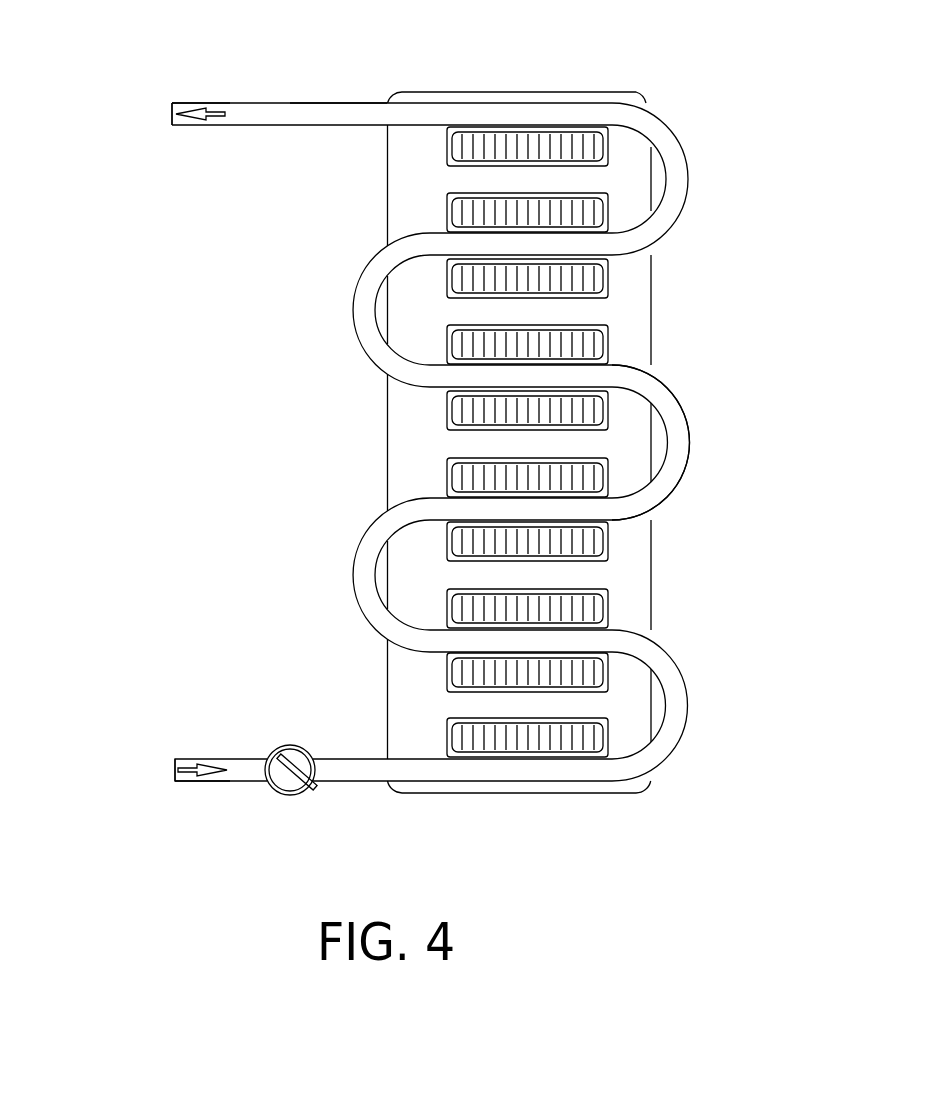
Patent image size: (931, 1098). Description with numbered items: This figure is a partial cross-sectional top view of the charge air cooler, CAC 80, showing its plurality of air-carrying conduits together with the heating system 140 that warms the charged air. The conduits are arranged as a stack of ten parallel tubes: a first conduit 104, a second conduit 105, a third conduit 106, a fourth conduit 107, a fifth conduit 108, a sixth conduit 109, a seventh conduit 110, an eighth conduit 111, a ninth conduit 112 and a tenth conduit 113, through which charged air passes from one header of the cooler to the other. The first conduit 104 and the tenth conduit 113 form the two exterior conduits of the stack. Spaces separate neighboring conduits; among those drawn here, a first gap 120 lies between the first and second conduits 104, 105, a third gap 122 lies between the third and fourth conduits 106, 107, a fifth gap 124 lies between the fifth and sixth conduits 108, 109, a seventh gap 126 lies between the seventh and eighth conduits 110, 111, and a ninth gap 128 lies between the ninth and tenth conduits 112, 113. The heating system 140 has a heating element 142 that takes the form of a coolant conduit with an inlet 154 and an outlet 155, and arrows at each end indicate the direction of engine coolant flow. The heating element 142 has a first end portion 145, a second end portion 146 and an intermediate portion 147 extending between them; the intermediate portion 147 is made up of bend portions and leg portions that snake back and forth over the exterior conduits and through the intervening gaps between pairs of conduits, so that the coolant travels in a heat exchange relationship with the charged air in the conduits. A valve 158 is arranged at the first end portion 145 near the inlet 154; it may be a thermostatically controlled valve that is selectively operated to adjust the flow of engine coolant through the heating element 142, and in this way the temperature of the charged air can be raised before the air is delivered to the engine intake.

The CAC 80 is at (735, 528).
The first conduit 104 is at (512, 135).
The second conduit 105 is at (598, 213).
The third conduit 106 is at (455, 278).
The fourth conduit 107 is at (600, 347).
The fifth conduit 108 is at (455, 411).
The sixth conduit 109 is at (600, 478).
The seventh conduit 110 is at (455, 543).
The eighth conduit 111 is at (600, 608).
The ninth conduit 112 is at (455, 673).
The tenth conduit 113 is at (600, 738).
The first gap 120 is at (455, 183).
The third gap 122 is at (455, 311).
The fifth gap 124 is at (455, 444).
The seventh gap 126 is at (455, 577).
The ninth gap 128 is at (455, 708).
The heating system 140 is at (352, 80).
The heating element 142 is at (318, 102).
The first end portion 145 is at (190, 782).
The second end portion 146 is at (187, 100).
The intermediate portion 147 is at (672, 476).
The inlet 154 is at (175, 770).
The outlet 155 is at (173, 115).
The valve 158 is at (343, 808).